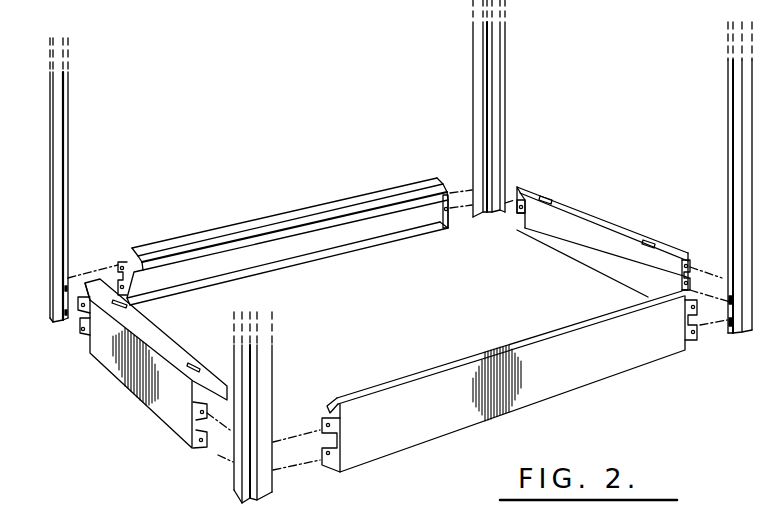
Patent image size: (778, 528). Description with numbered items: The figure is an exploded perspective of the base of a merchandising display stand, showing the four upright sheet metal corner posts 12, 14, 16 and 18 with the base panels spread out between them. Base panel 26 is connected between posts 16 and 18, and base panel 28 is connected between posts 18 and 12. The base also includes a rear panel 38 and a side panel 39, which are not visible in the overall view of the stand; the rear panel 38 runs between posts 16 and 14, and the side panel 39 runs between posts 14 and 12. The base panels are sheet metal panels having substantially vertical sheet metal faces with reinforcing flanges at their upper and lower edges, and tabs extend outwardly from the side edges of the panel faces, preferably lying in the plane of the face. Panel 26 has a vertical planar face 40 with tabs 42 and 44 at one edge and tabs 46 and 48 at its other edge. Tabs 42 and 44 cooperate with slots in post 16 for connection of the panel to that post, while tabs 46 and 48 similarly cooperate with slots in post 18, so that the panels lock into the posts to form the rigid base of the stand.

The corner post 12 is at (730, 142).
The corner post 14 is at (505, 72).
The corner post 16 is at (70, 152).
The corner post 18 is at (273, 378).
The base panel 26 is at (119, 400).
The base panel 28 is at (622, 362).
The rear panel 38 is at (347, 235).
The side panel 39 is at (572, 240).
The vertical planar face 40 is at (105, 352).
The tab 42 is at (82, 330).
The tab 44 is at (78, 323).
The tab 46 is at (207, 407).
The tab 48 is at (202, 448).